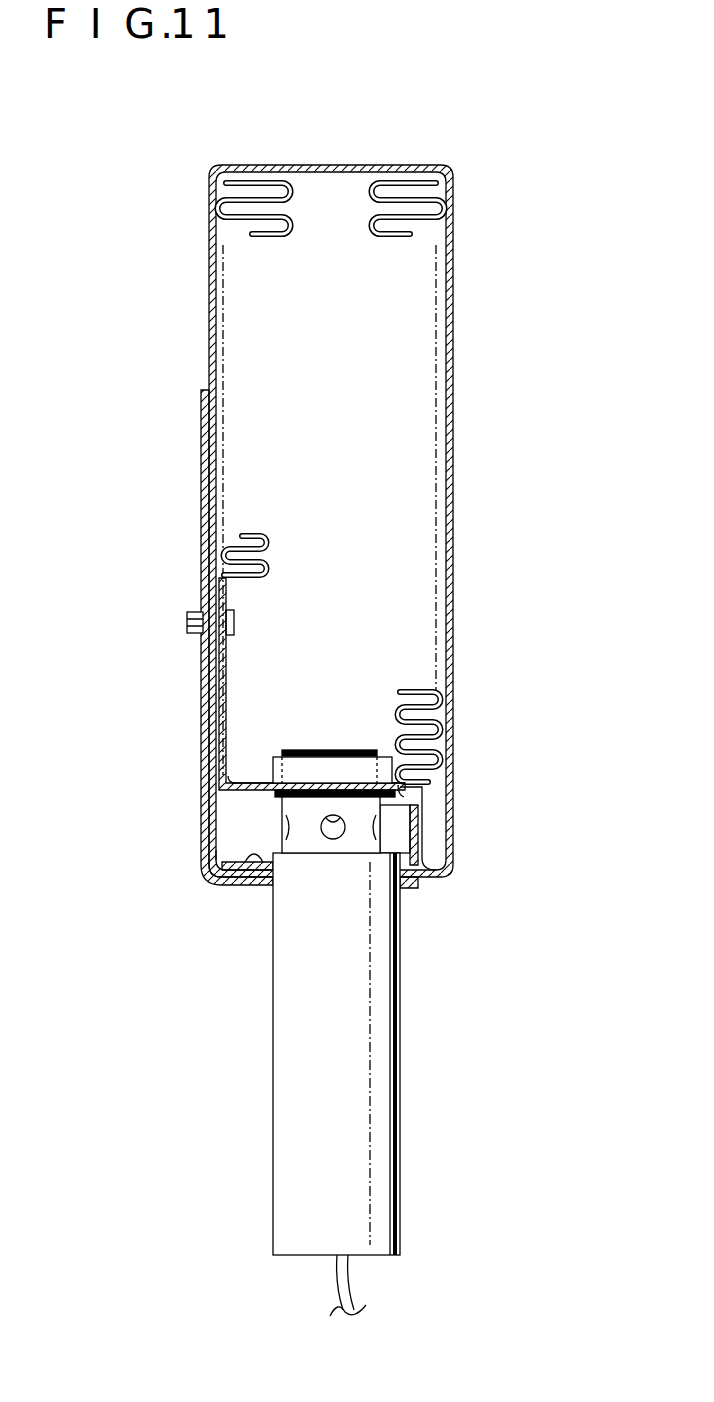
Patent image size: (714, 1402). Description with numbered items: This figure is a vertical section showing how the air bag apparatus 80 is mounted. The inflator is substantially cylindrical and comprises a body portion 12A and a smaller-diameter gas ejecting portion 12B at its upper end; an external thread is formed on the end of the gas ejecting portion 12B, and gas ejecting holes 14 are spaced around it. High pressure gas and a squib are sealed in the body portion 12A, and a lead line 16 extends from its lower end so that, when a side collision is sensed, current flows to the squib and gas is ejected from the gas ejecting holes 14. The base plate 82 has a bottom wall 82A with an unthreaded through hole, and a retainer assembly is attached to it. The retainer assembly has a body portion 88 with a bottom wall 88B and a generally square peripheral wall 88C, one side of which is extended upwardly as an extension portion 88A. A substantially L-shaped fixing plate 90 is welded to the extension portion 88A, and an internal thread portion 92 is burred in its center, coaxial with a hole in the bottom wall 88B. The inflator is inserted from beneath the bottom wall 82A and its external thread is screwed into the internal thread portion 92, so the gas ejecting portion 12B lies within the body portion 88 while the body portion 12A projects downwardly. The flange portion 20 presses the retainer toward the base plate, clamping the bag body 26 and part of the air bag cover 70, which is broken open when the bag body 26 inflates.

The air bag apparatus 80 is at (537, 285).
The air bag cover 70 is at (452, 397).
The bag body 26 is at (238, 241).
The base plate 82 is at (203, 513).
The bottom wall 82A is at (410, 888).
The body portion 88 is at (228, 657).
The extension portion 88A is at (229, 678).
The bottom wall 88B is at (242, 880).
The peripheral wall 88C is at (424, 832).
The flange portion 20 is at (209, 837).
The fixing plate 90 is at (253, 776).
The internal thread portion 92 is at (283, 755).
The gas ejecting holes 14 is at (333, 815).
The body portion 12A is at (280, 1125).
The gas ejecting portion 12B is at (287, 898).
The lead line 16 is at (352, 1283).